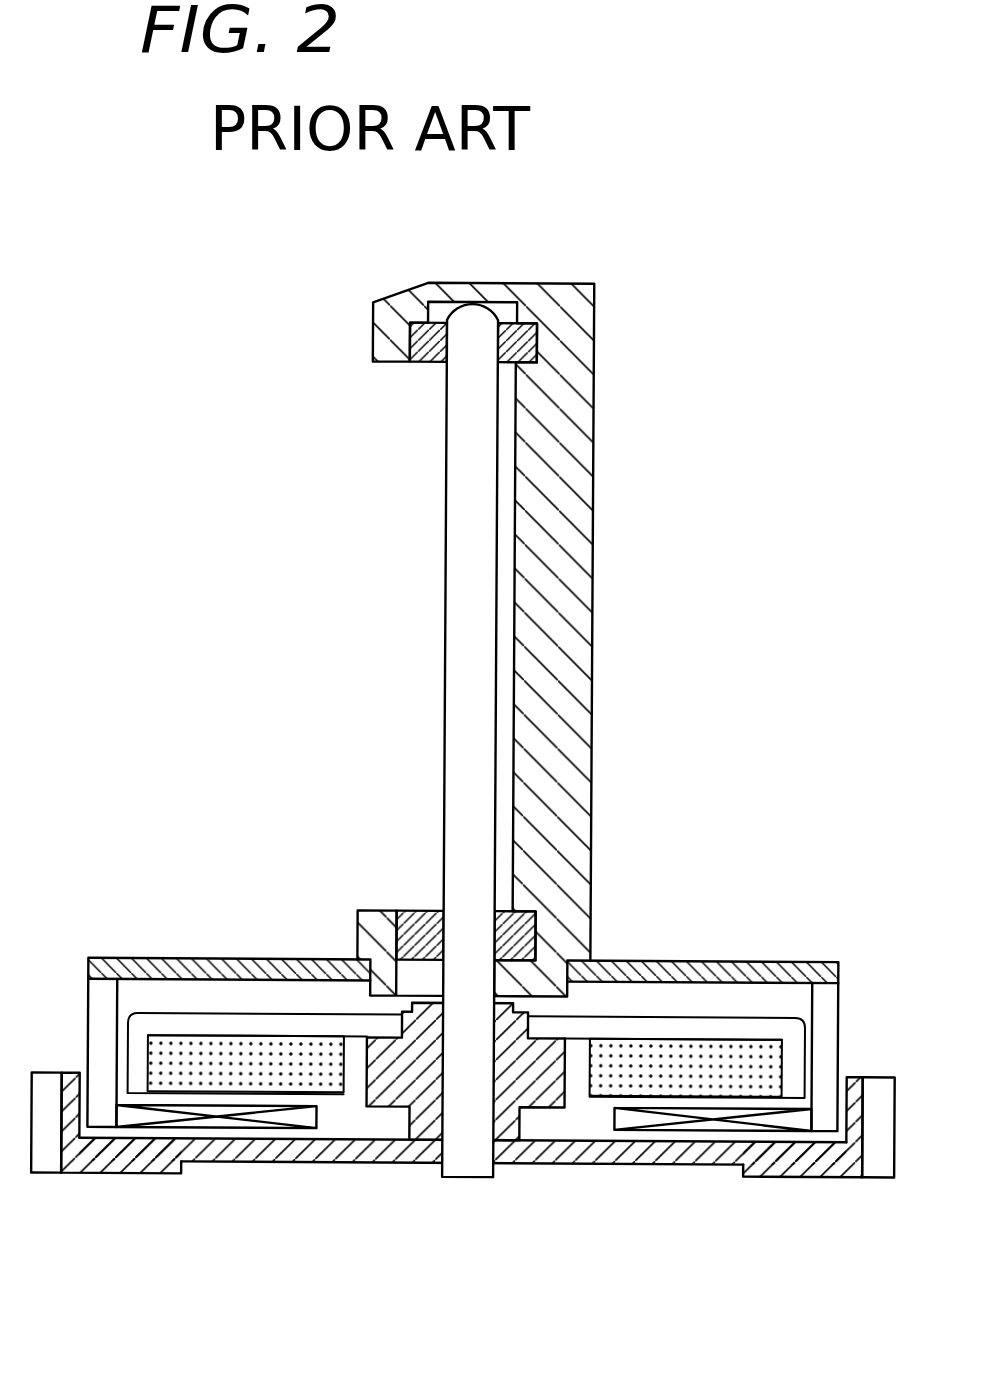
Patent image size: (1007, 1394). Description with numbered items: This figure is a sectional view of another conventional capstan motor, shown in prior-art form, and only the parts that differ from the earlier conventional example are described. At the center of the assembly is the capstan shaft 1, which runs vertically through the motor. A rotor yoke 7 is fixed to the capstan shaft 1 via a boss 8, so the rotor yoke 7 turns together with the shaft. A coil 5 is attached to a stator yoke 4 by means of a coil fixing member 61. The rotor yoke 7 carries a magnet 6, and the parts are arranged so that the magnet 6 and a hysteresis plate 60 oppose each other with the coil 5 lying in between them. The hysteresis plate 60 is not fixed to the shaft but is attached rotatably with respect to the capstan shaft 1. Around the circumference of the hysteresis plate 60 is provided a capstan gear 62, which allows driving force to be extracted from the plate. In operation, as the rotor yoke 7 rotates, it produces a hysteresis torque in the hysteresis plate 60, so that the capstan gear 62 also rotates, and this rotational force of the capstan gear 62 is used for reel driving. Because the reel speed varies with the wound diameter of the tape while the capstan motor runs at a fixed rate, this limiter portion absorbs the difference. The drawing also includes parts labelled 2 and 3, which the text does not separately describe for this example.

The capstan shaft 1 is at (465, 563).
The bracket 2 is at (584, 518).
The bearing 3 is at (418, 363).
The stator yoke 4 is at (672, 978).
The coil 5 is at (227, 1130).
The magnet 6 is at (251, 1043).
The rotor yoke 7 is at (156, 1025).
The boss 8 is at (414, 1022).
The hysteresis plate 60 is at (545, 1163).
The coil fixing member 61 is at (109, 1141).
The capstan gear 62 is at (79, 1176).